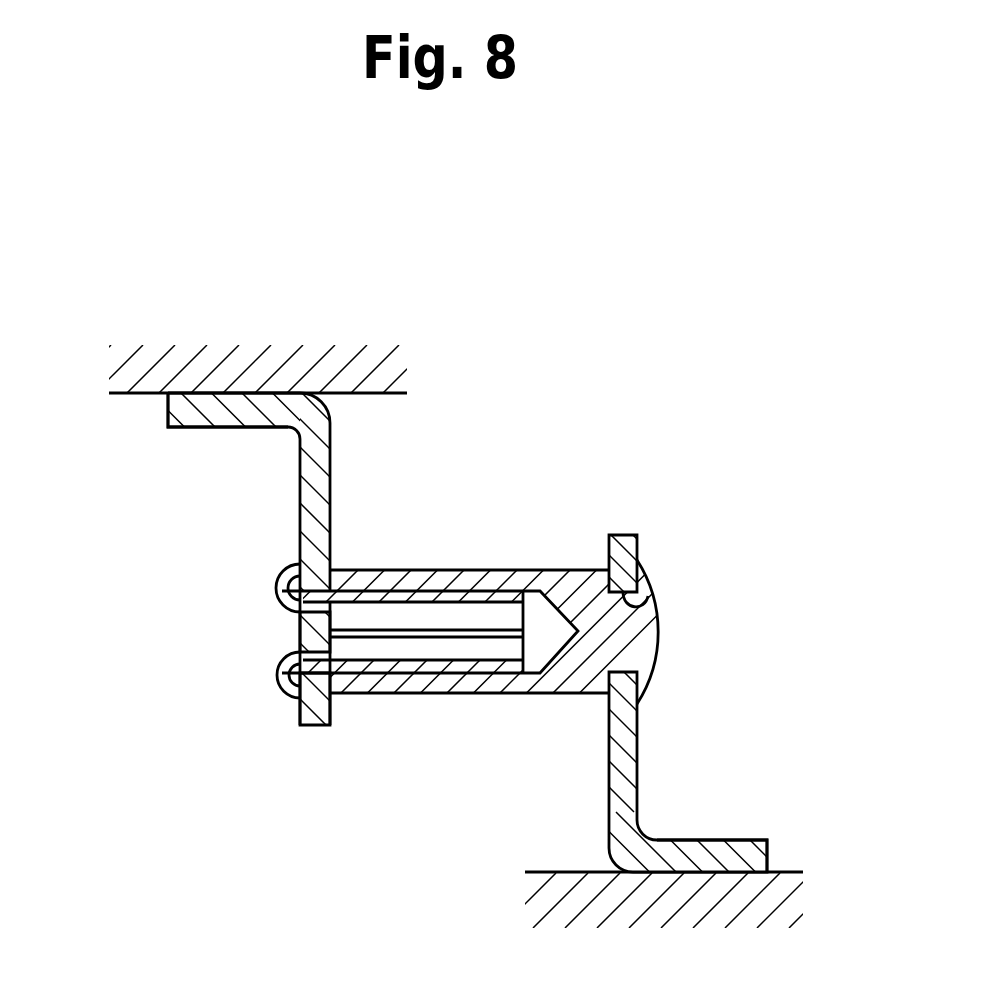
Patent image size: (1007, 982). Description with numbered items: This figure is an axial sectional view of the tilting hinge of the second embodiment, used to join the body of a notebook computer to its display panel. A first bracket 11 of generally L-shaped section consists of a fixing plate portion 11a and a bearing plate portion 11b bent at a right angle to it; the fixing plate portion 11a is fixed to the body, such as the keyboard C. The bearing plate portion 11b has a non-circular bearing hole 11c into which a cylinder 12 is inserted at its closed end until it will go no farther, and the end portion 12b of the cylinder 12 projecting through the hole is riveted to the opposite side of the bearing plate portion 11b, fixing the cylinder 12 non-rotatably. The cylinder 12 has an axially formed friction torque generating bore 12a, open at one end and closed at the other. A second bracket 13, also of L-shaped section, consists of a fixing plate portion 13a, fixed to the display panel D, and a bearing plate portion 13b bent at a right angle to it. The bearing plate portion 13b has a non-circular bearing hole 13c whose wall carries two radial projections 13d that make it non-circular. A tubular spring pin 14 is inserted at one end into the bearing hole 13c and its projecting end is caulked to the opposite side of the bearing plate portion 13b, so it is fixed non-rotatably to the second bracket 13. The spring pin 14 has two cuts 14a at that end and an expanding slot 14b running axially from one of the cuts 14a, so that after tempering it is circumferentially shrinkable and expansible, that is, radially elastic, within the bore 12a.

The first bracket 11 is at (652, 672).
The fixing plate portion 11a is at (742, 840).
The bearing plate portion 11b is at (620, 535).
The non-circular bearing hole 11c is at (657, 582).
The cylinder 12 is at (454, 643).
The friction torque generating bore 12a is at (468, 594).
The one end portion of the cylinder 12b is at (642, 632).
The second bracket 13 is at (345, 585).
The fixing plate portion 13a is at (180, 418).
The bearing plate portion 13b is at (313, 706).
The non-circular bearing hole 13c is at (298, 612).
The projections 13d is at (299, 631).
The tubular spring pin 14 is at (425, 665).
The cuts 14a is at (292, 645).
The expanding slot 14b is at (490, 638).
The keyboard C is at (788, 878).
The display panel D is at (377, 350).